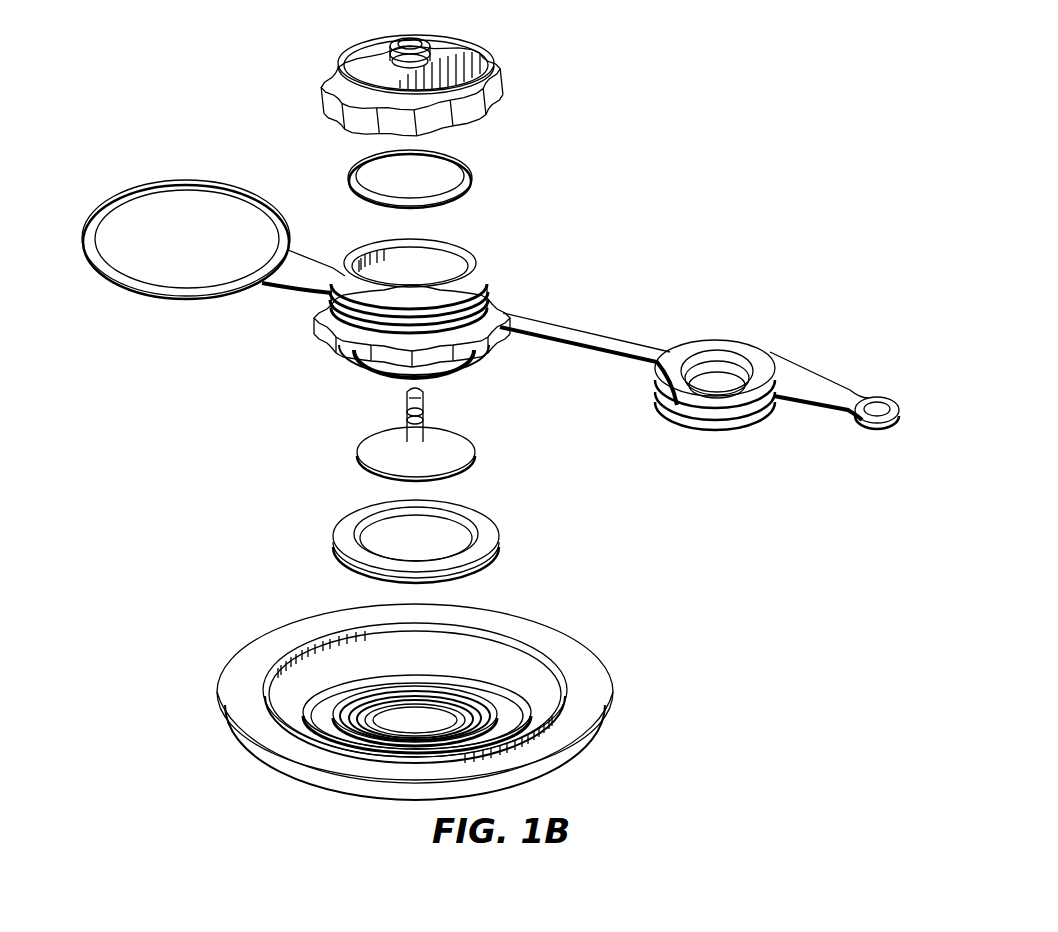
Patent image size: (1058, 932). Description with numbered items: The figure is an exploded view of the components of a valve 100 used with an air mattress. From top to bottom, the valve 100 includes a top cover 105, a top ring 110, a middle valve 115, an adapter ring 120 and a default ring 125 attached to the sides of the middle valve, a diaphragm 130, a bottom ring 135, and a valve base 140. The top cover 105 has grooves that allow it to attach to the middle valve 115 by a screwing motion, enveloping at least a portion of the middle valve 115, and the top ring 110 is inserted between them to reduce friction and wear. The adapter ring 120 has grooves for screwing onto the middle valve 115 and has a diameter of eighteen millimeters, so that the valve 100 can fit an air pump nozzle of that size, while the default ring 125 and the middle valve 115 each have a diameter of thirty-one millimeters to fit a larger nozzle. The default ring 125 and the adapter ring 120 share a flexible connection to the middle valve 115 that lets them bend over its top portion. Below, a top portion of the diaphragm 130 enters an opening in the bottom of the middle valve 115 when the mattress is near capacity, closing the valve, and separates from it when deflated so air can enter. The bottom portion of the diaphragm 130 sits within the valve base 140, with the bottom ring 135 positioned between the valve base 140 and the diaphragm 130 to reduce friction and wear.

The valve 100 is at (205, 46).
The top cover 105 is at (495, 68).
The top ring 110 is at (470, 165).
The middle valve 115 is at (322, 336).
The adapter ring 120 is at (745, 415).
The default ring 125 is at (150, 298).
The diaphragm 130 is at (470, 437).
The bottom ring 135 is at (490, 516).
The valve base 140 is at (590, 656).